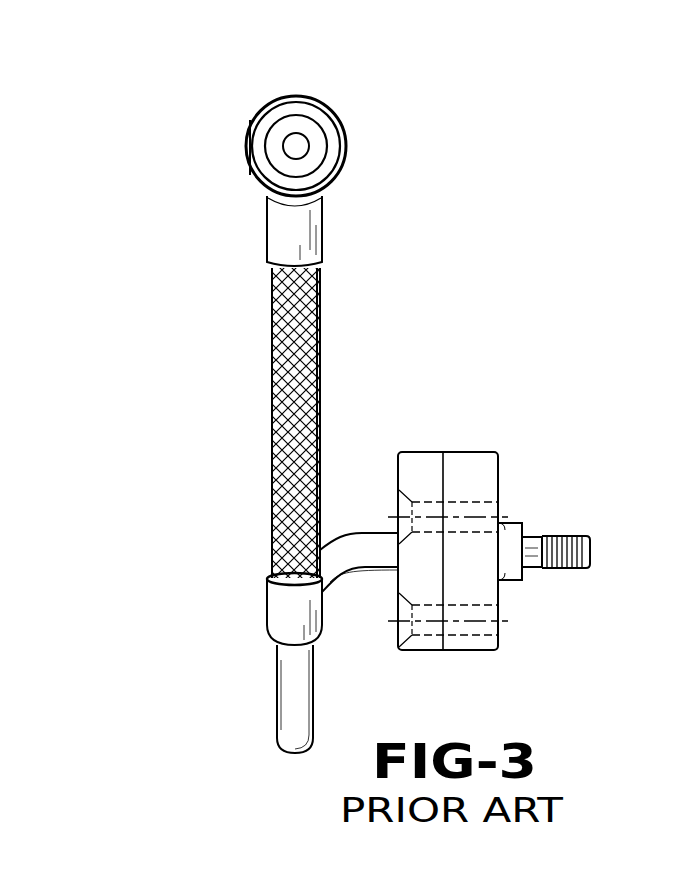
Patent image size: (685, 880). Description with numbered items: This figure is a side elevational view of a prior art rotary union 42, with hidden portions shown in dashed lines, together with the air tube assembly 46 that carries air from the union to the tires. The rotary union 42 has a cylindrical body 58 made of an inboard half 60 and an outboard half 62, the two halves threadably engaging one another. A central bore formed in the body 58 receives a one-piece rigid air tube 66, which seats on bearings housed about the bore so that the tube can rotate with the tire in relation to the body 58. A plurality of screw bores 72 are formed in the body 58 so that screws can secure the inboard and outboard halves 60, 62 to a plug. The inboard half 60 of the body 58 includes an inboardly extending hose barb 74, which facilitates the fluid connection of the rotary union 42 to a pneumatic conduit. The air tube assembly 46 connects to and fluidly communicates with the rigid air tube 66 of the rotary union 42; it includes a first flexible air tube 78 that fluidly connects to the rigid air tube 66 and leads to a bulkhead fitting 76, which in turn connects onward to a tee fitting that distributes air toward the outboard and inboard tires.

The rotary union 42 is at (495, 432).
The air tube assembly 46 is at (272, 400).
The cylindrical body 58 is at (458, 450).
The inboard half 60 is at (475, 650).
The outboard half 62 is at (422, 452).
The rigid air tube 66 is at (352, 548).
The screw bores 72 is at (500, 622).
The hose barb 74 is at (562, 562).
The bulkhead fitting 76 is at (328, 112).
The first flexible air tube 78 is at (290, 318).